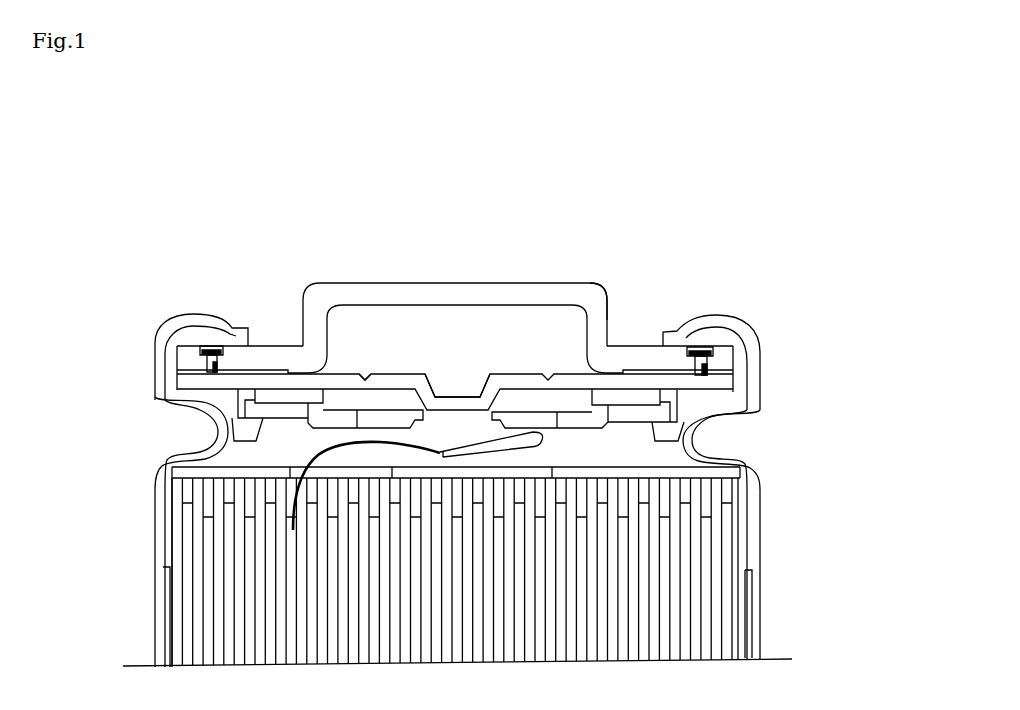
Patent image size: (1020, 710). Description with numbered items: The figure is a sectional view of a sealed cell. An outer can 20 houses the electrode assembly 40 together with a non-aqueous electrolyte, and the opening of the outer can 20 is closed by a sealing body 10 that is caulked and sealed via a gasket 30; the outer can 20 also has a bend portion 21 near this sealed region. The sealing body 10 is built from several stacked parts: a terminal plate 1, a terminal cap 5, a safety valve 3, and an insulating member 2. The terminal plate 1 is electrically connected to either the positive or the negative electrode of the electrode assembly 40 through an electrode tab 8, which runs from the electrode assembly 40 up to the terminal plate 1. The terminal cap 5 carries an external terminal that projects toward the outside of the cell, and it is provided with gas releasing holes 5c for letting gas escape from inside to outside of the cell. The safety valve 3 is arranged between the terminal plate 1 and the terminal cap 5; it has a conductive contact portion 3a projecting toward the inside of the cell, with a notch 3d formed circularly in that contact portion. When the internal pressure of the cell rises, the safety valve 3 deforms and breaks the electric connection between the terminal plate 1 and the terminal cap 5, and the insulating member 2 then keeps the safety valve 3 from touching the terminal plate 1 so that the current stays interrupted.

The terminal plate 1 is at (638, 413).
The insulating member 2 is at (640, 393).
The safety valve 3 is at (509, 297).
The conductive contact portion 3a is at (462, 393).
The notch 3d is at (366, 372).
The terminal cap 5 is at (438, 284).
The gas releasing holes 5c is at (600, 296).
The electrode tab 8 is at (310, 463).
The sealing body 10 is at (509, 326).
The outer can 20 is at (411, 501).
The bend portion 21 is at (214, 420).
The gasket 30 is at (173, 353).
The electrode assembly 40 is at (720, 576).